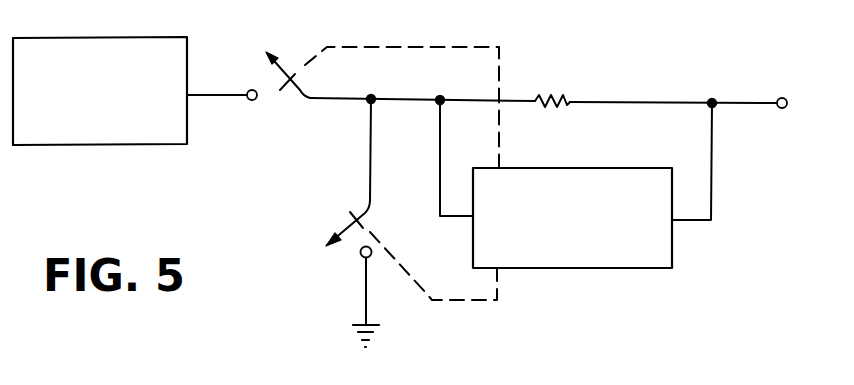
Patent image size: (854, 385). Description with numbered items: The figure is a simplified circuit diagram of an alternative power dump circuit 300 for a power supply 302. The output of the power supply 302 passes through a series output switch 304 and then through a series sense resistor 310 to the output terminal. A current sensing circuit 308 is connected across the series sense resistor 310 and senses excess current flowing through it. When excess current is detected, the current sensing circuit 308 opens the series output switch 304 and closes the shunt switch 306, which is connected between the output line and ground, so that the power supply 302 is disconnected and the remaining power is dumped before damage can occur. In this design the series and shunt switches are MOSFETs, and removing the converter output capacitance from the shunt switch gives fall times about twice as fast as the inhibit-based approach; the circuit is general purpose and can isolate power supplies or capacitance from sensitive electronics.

The power dump circuit 300 is at (195, 208).
The power supply 302 is at (108, 37).
The series output switch 304 is at (288, 102).
The shunt switch 306 is at (352, 240).
The current sensing circuit 308 is at (598, 268).
The series sense resistor 310 is at (557, 92).